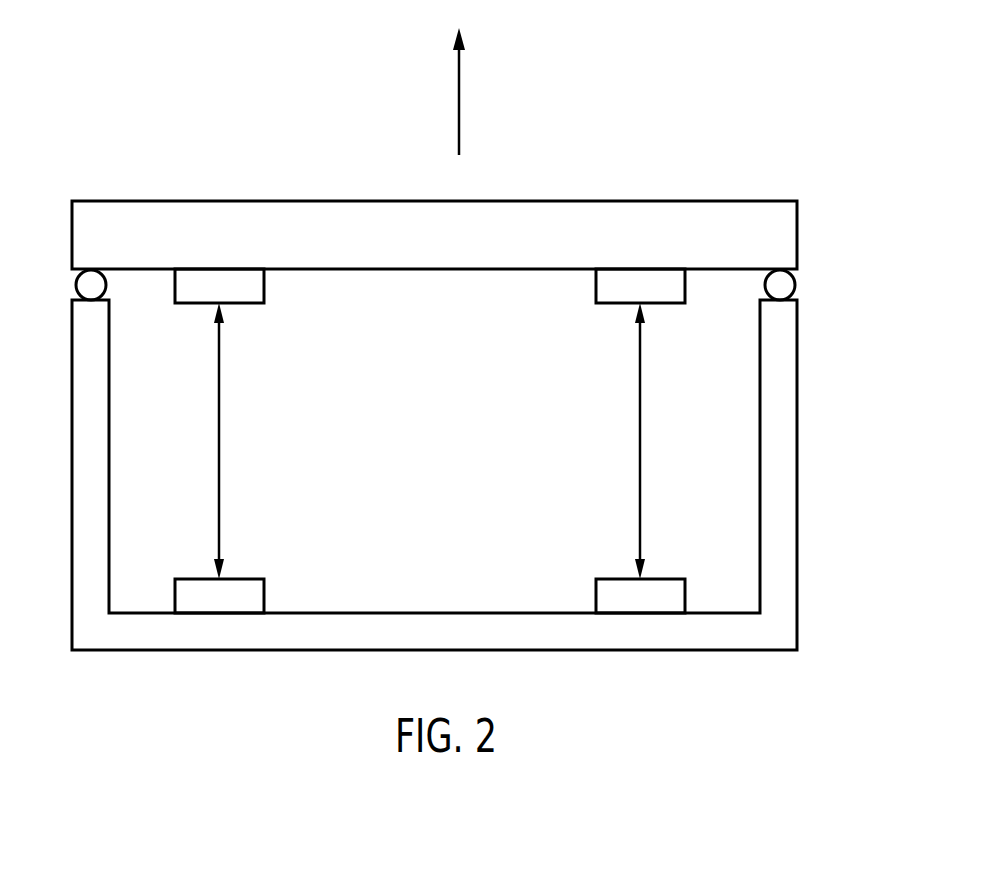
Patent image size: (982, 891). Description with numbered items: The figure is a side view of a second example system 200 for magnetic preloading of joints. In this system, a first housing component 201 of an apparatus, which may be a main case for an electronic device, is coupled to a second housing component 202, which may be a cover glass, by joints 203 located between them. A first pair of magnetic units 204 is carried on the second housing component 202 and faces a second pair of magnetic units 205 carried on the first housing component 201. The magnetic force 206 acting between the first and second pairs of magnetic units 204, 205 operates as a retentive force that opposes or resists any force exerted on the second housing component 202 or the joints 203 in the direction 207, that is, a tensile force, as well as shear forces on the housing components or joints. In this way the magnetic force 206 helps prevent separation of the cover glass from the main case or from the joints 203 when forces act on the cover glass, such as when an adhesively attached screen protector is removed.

The system 200 is at (636, 173).
The first housing component 201 is at (786, 418).
The second housing component 202 is at (787, 236).
The joints 203 is at (99, 288).
The first pair of magnetic units 204 is at (256, 288).
The second pair of magnetic units 205 is at (255, 597).
The magnetic force 206 is at (219, 405).
The direction 207 is at (459, 130).